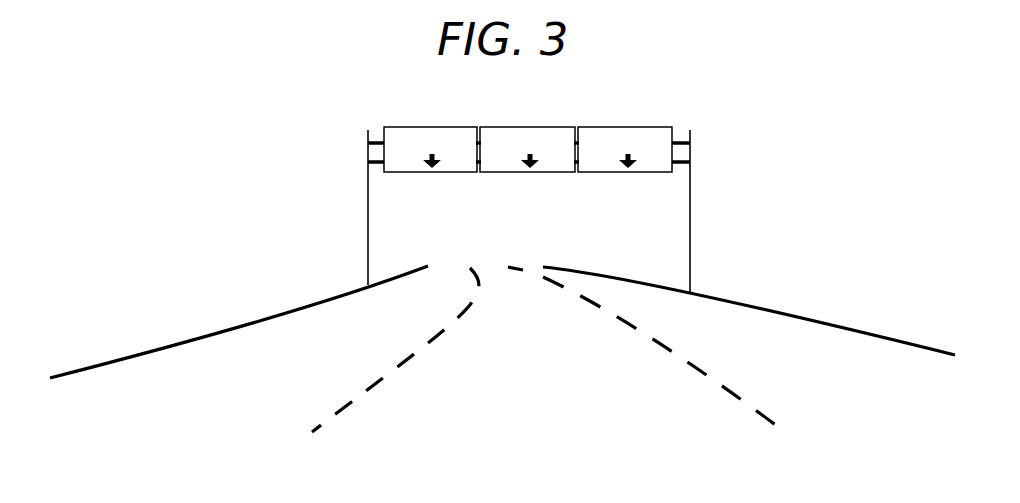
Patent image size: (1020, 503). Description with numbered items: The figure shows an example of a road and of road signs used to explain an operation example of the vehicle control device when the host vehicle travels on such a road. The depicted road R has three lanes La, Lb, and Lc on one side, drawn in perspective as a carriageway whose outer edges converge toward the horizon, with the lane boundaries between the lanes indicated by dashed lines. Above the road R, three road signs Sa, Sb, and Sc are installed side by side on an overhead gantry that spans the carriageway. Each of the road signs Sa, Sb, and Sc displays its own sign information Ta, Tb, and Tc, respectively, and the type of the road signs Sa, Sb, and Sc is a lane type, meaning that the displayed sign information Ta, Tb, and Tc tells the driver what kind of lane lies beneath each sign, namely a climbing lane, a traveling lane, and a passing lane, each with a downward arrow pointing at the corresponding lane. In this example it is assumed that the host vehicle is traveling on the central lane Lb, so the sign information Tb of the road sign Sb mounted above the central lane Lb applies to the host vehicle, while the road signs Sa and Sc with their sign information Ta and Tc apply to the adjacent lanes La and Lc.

The road R is at (268, 318).
The lane La is at (222, 400).
The central lane Lb is at (525, 402).
The lane Lc is at (858, 380).
The sign information Ta is at (397, 132).
The sign information Tb is at (495, 132).
The sign information Tc is at (593, 132).
The road sign Sa is at (432, 127).
The road sign Sb is at (530, 127).
The road sign Sc is at (627, 127).